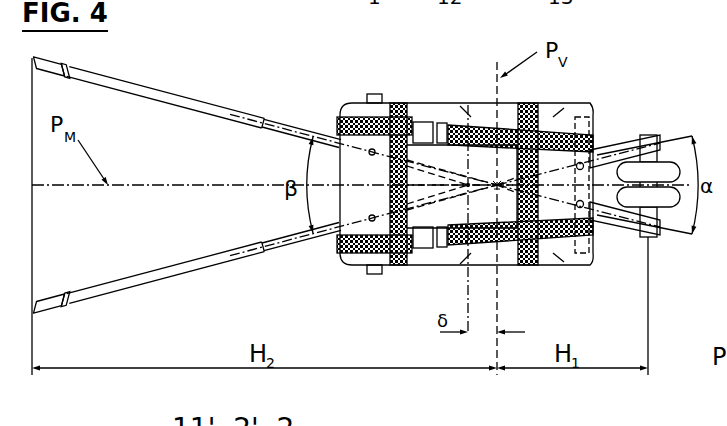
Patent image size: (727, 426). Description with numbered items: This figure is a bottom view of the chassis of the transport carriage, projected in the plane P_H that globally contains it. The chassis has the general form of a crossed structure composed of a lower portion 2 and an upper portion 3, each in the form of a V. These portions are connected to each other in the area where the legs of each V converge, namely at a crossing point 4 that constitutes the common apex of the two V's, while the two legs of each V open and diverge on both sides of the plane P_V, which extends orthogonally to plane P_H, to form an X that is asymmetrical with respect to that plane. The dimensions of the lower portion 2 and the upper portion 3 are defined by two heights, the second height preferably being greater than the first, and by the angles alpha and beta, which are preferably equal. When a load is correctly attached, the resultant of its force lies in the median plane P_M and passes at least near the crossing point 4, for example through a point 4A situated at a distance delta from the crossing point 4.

The lower portion 2 is at (271, 198).
The upper portion 3 is at (614, 198).
The crossing point 4 is at (494, 178).
The point 4A is at (466, 188).